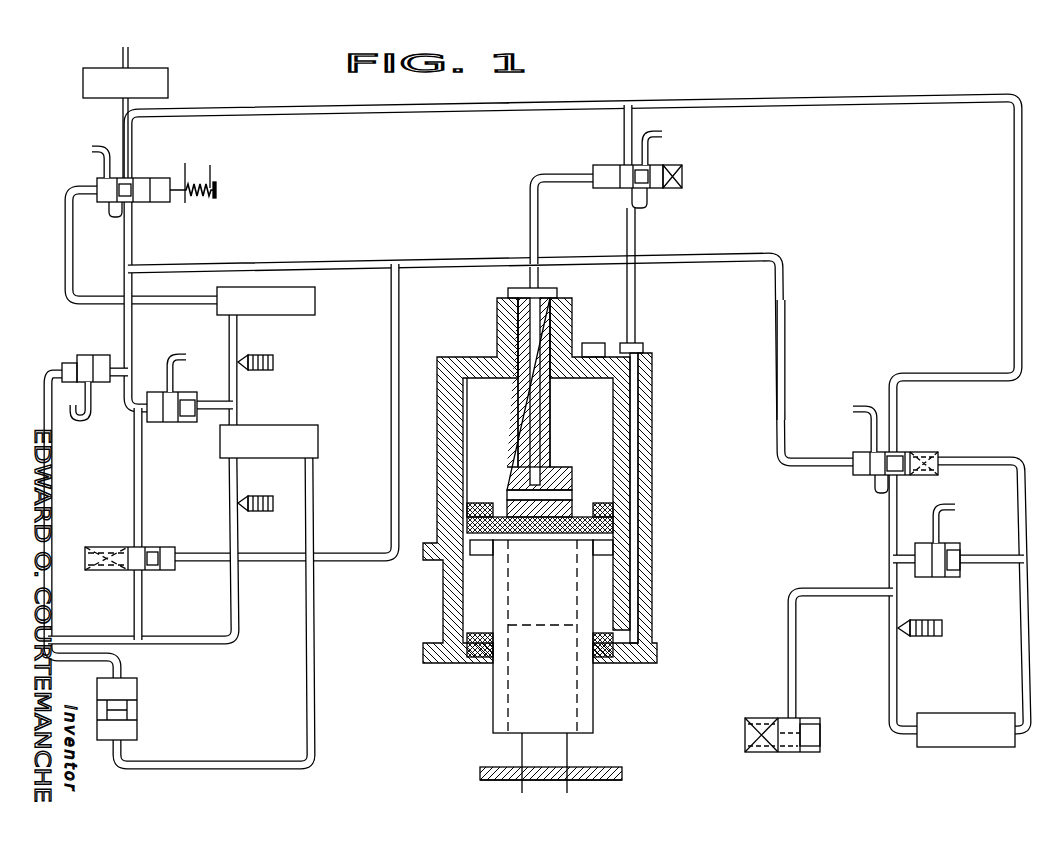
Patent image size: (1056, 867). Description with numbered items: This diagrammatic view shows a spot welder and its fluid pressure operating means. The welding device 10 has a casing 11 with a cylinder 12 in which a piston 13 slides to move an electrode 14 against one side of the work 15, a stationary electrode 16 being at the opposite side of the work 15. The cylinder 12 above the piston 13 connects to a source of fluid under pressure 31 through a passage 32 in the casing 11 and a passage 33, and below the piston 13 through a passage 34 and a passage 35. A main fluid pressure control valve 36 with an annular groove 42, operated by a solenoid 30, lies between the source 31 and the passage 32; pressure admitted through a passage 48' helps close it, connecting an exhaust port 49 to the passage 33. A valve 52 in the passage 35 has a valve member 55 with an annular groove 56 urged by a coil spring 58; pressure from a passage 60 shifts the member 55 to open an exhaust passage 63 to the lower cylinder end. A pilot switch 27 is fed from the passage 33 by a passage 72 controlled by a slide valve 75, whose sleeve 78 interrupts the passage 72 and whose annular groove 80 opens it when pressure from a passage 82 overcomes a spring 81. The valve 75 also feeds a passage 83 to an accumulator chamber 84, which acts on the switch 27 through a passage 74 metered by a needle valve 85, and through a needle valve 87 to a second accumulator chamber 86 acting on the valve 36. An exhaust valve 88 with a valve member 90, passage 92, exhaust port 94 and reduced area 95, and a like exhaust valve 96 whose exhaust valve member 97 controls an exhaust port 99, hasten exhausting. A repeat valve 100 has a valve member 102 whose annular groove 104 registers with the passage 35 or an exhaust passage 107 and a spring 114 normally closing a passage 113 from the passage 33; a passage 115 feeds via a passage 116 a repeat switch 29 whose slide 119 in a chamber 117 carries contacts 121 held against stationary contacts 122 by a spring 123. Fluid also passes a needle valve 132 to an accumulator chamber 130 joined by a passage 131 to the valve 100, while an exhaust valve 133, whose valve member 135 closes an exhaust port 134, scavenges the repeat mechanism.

The welding device 10 is at (561, 540).
The casing 11 is at (447, 384).
The cylinder 12 is at (607, 590).
The piston 13 is at (636, 520).
The electrode 14 is at (562, 749).
The work 15 is at (500, 769).
The stationary electrode 16 is at (578, 789).
The pilot switch 27 is at (142, 704).
The repeat switch 29 is at (747, 713).
The solenoid 30 is at (212, 165).
The source of fluid under pressure 31 is at (130, 55).
The passage 32 is at (535, 320).
The passage 33 is at (362, 262).
The passage 34 is at (634, 446).
The passage 35 is at (500, 113).
The main fluid pressure control valve 36 is at (152, 205).
The annular groove 42 is at (126, 178).
The passage 48' is at (121, 245).
The exhaust port 49 is at (92, 147).
The valve 52 is at (590, 192).
The valve member 55 is at (625, 176).
The annular groove 56 is at (660, 163).
The coil spring 58 is at (673, 189).
The passage 60 is at (530, 212).
The exhaust passage 63 is at (662, 133).
The passage 72 is at (130, 452).
The passage 74 is at (216, 762).
The slide valve 75 is at (150, 538).
The sleeve 78 is at (165, 571).
The annular groove 80 is at (150, 571).
The spring 81 is at (106, 571).
The passage 82 is at (258, 561).
The passage 83 is at (206, 641).
The accumulator chamber 84 is at (306, 425).
The needle valve 85 is at (258, 510).
The second accumulator chamber 86 is at (316, 296).
The needle valve 87 is at (275, 362).
The exhaust valve 88 is at (80, 353).
The valve member 90 is at (90, 378).
The passage 92 is at (53, 493).
The exhaust port 94 is at (84, 387).
The area 95 is at (62, 368).
The exhaust valve 96 is at (155, 392).
The exhaust valve member 97 is at (181, 398).
The exhaust port 99 is at (172, 357).
The repeat valve 100 is at (896, 452).
The valve member 102 is at (861, 452).
The annular groove 104 is at (880, 466).
The exhaust passage 107 is at (868, 408).
The passage 113 is at (784, 296).
The spring 114 is at (921, 476).
The passage 115 is at (889, 527).
The passage 116 is at (798, 664).
The chamber 117 is at (780, 750).
The slide 119 is at (782, 718).
The contacts 121 is at (820, 735).
The stationary contacts 122 is at (802, 722).
The spring 123 is at (770, 752).
The accumulator chamber 130 is at (945, 713).
The passage 131 is at (976, 457).
The needle valve 132 is at (943, 628).
The exhaust valve 133 is at (960, 540).
The exhaust port 134 is at (936, 519).
The valve member 135 is at (941, 577).